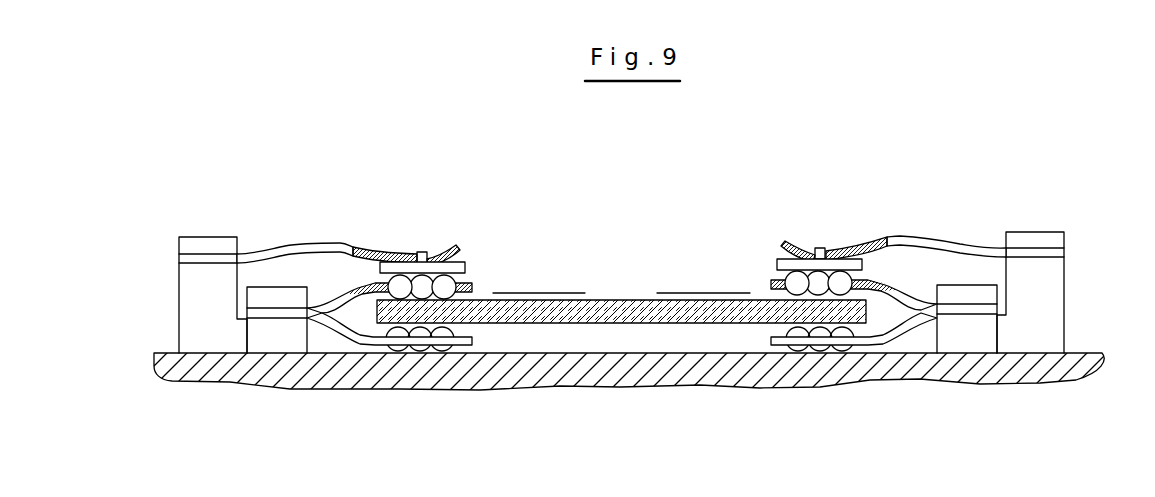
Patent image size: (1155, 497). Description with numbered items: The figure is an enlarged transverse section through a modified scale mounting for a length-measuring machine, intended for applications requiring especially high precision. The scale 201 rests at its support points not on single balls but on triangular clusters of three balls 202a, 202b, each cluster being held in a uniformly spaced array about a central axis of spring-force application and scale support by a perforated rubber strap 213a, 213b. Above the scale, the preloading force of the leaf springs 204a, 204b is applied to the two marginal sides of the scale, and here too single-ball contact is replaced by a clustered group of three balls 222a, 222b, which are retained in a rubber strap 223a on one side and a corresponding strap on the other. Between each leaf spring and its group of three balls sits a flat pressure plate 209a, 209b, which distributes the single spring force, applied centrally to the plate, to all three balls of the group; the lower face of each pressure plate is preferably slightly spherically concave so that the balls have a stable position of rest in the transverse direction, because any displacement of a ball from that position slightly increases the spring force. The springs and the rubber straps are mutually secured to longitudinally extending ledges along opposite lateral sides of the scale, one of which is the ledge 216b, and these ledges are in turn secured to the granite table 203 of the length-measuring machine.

The scale 201 is at (617, 299).
The triangular cluster of three balls 202a is at (425, 353).
The triangular cluster of three balls 202b is at (816, 353).
The granite table 203 is at (1063, 372).
The leaf spring 204a is at (316, 247).
The leaf spring 204b is at (911, 237).
The flat pressure plate 209a is at (465, 260).
The flat pressure plate 209b is at (778, 260).
The perforated rubber strap 213a is at (356, 345).
The perforated rubber strap 213b is at (896, 295).
The longitudinally extending ledge 216b is at (195, 302).
The clustered group of three balls 222a is at (446, 285).
The clustered group of three balls 222b is at (786, 278).
The rubber strap 223a is at (347, 295).